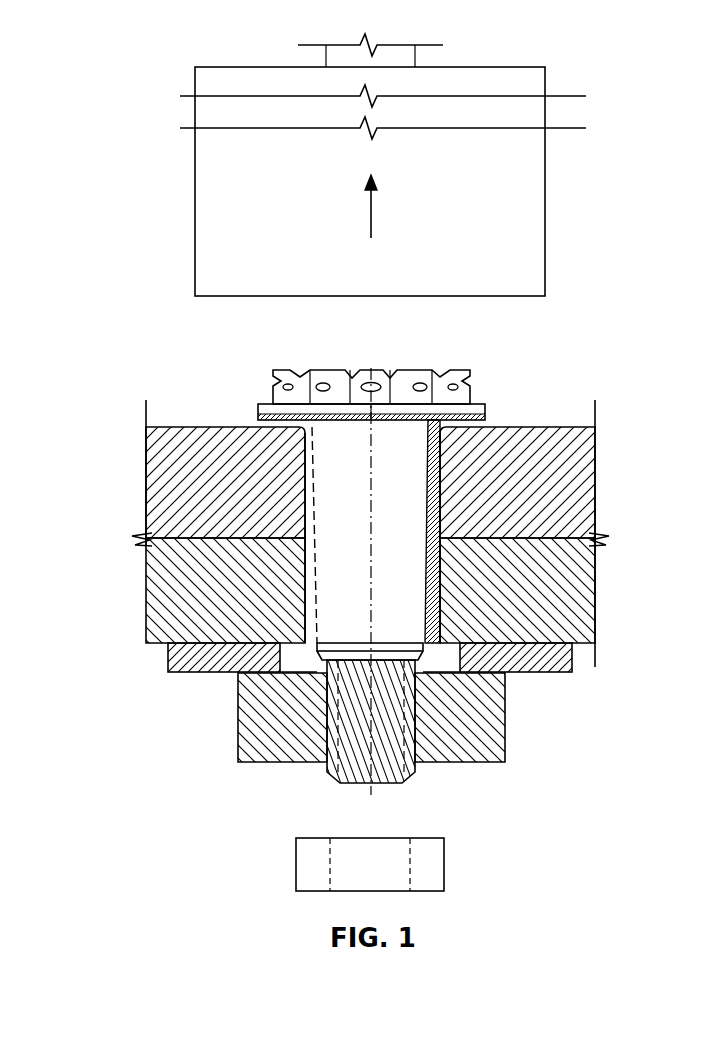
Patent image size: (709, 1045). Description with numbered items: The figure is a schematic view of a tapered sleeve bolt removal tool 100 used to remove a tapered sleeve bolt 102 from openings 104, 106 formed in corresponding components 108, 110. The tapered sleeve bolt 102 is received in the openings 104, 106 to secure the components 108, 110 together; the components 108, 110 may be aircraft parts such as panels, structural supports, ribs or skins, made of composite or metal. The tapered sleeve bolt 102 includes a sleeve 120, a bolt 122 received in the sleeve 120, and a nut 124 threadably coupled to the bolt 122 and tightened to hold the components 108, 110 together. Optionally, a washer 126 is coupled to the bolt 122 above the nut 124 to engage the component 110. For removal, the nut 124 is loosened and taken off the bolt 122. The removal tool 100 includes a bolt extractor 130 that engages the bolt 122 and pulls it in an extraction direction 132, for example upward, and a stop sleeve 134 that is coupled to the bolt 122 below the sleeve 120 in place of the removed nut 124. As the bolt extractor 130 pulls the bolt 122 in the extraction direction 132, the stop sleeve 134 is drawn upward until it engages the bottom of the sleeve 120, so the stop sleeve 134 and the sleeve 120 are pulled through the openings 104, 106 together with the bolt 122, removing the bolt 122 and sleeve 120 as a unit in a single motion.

The tapered sleeve bolt removal tool 100 is at (632, 146).
The tapered sleeve bolt 102 is at (499, 383).
The opening 104 is at (302, 498).
The opening 106 is at (302, 582).
The component 108 is at (165, 490).
The component 110 is at (162, 580).
The sleeve 120 is at (432, 615).
The bolt 122 is at (397, 745).
The nut 124 is at (487, 740).
The washer 126 is at (556, 662).
The bolt extractor 130 is at (549, 190).
The extraction direction 132 is at (373, 215).
The stop sleeve 134 is at (446, 868).